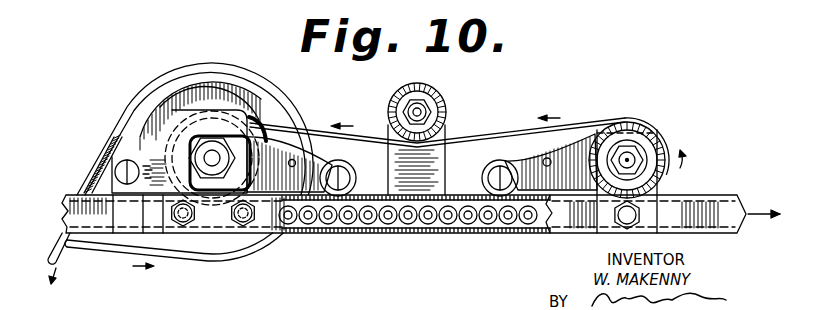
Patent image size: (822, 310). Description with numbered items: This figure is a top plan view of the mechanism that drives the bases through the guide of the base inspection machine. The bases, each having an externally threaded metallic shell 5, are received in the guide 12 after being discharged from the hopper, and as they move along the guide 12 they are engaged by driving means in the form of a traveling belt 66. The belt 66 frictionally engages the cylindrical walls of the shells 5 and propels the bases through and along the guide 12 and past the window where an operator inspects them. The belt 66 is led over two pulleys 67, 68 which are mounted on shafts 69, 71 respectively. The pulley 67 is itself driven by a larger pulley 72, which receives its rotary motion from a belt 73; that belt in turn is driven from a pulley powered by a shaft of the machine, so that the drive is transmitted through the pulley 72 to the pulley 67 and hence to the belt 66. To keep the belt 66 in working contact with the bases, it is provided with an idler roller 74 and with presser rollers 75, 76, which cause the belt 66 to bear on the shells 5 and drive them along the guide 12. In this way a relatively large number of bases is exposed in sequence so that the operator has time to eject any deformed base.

The metallic shell 5 is at (372, 226).
The guide 12 is at (60, 199).
The traveling belt 66 is at (490, 136).
The pulley 67 is at (262, 130).
The pulley 68 is at (631, 128).
The shaft 69 is at (213, 158).
The shaft 71 is at (630, 158).
The pulley 72 is at (162, 87).
The belt 73 is at (101, 162).
The idler roller 74 is at (433, 100).
The presser roller 75 is at (352, 172).
The presser roller 76 is at (499, 163).